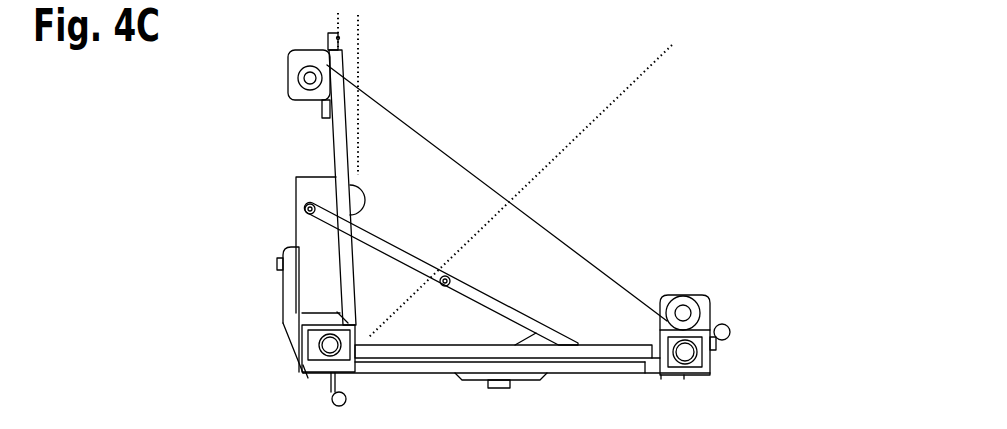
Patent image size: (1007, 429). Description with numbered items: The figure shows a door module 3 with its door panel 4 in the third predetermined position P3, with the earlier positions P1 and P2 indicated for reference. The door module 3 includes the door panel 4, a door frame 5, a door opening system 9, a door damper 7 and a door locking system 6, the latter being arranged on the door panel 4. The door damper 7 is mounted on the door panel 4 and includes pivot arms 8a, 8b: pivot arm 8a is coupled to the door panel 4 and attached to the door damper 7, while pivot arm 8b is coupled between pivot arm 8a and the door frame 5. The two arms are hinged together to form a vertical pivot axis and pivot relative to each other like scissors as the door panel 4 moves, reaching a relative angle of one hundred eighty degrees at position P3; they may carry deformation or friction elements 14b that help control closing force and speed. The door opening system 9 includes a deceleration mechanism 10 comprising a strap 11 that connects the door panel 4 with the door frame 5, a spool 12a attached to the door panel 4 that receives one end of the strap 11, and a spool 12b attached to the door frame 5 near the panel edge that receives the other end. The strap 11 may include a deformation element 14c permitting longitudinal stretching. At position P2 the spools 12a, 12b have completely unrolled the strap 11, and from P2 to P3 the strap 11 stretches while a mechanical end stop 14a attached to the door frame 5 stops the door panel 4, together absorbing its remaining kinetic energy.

The door module 3 is at (166, 124).
The door panel 4 is at (335, 137).
The door frame 5 is at (303, 372).
The door locking system 6 is at (338, 38).
The door damper 7 is at (315, 240).
The pivot arm 8a is at (397, 258).
The pivot arm 8b is at (492, 303).
The door opening system 9 is at (232, 190).
The deceleration mechanism 10 is at (632, 137).
The strap 11 is at (537, 222).
The spool 12a is at (288, 88).
The spool 12b is at (703, 298).
The mechanical end stop 14a is at (287, 307).
The deformation or friction elements 14b is at (456, 304).
The deformation element 14c is at (612, 247).
The position P1 is at (537, 181).
The position P2 is at (376, 90).
The position P3 is at (320, 23).